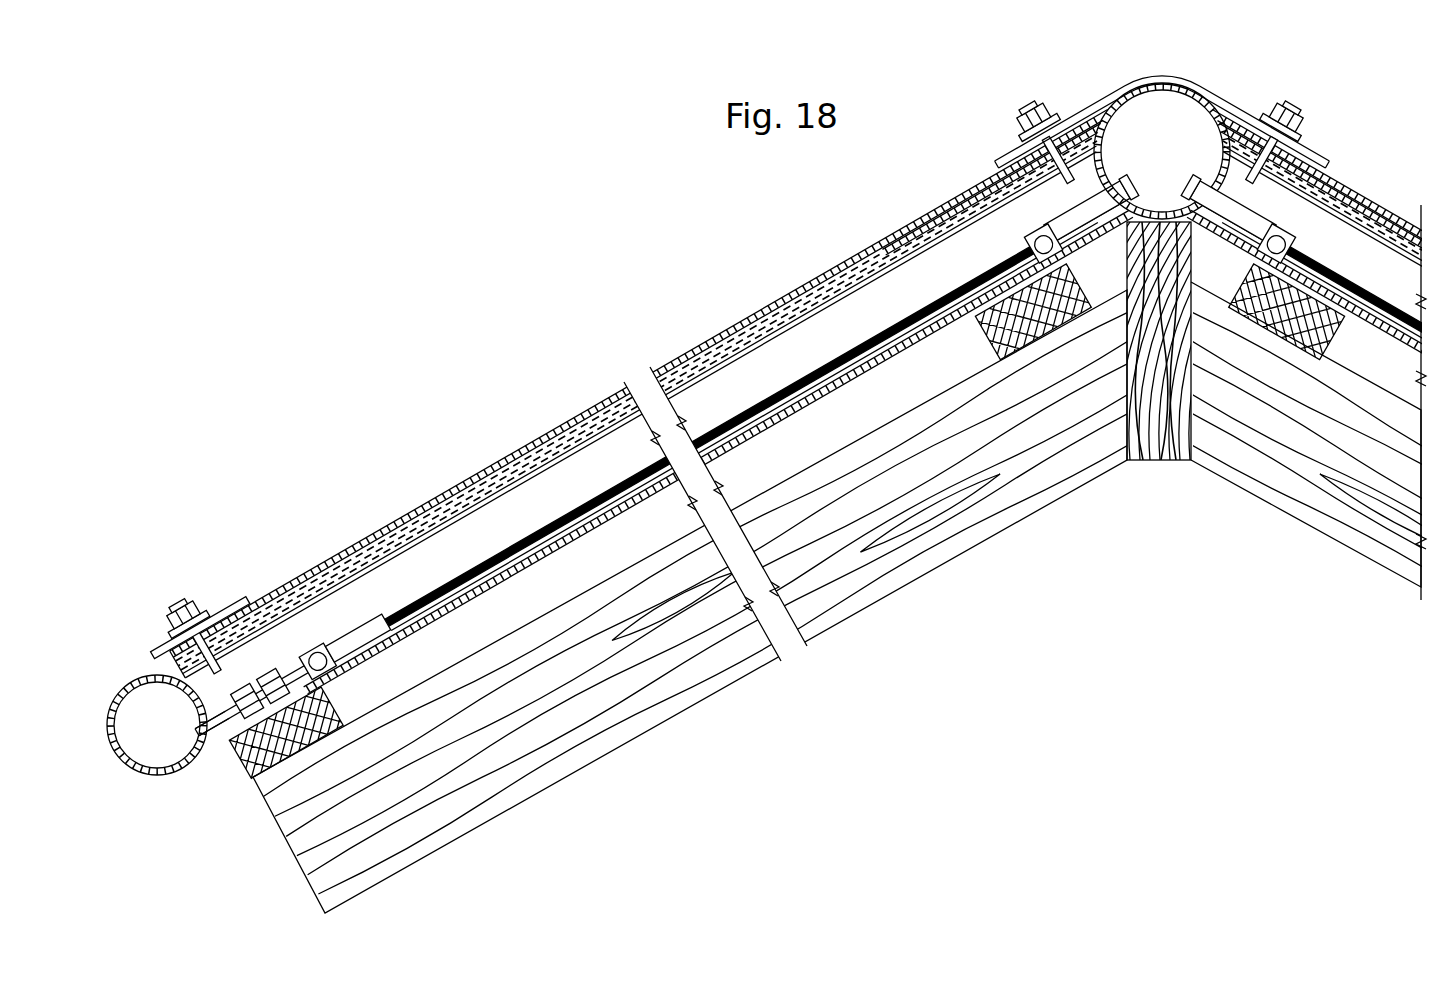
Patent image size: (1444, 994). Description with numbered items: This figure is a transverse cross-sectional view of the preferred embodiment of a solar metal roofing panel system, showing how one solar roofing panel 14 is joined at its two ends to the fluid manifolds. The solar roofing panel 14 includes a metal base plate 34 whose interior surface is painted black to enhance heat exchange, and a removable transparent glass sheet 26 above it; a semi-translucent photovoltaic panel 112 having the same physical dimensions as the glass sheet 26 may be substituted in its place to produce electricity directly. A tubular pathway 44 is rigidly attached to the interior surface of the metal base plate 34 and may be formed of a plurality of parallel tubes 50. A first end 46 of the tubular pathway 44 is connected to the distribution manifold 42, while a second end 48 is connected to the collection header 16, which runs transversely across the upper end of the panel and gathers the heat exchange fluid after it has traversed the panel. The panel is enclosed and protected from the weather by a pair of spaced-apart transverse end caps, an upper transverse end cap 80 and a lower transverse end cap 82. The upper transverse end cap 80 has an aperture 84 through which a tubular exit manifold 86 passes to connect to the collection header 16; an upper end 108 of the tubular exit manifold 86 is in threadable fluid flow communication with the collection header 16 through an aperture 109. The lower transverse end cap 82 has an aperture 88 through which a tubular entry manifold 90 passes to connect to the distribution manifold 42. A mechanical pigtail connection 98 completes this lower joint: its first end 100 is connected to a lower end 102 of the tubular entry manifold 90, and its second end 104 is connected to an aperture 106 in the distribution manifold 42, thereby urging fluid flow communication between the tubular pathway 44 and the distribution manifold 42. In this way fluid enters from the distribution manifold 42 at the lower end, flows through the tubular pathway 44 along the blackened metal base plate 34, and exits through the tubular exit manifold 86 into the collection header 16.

The solar roofing panel 14 is at (838, 394).
The collection header 16 is at (1224, 124).
The transparent glass sheet 26 is at (820, 278).
The metal base plate 34 is at (566, 538).
The distribution manifold 42 is at (178, 780).
The tubular pathway 44 is at (366, 628).
The first end 46 is at (330, 694).
The second end 48 is at (1012, 176).
The parallel tube 50 is at (762, 403).
The upper transverse end cap 80 is at (1092, 128).
The lower transverse end cap 82 is at (165, 653).
The aperture 84 is at (1106, 238).
The tubular exit manifold 86 is at (1062, 230).
The aperture 88 is at (226, 700).
The tubular entry manifold 90 is at (172, 770).
The mechanical pigtail connection 98 is at (290, 650).
The first end 100 is at (322, 655).
The lower end 102 is at (348, 672).
The second end 104 is at (190, 722).
The aperture 106 is at (140, 768).
The upper end 108 is at (1140, 186).
The aperture 109 is at (1133, 93).
The semi-translucent photovoltaic panel 112 is at (646, 394).